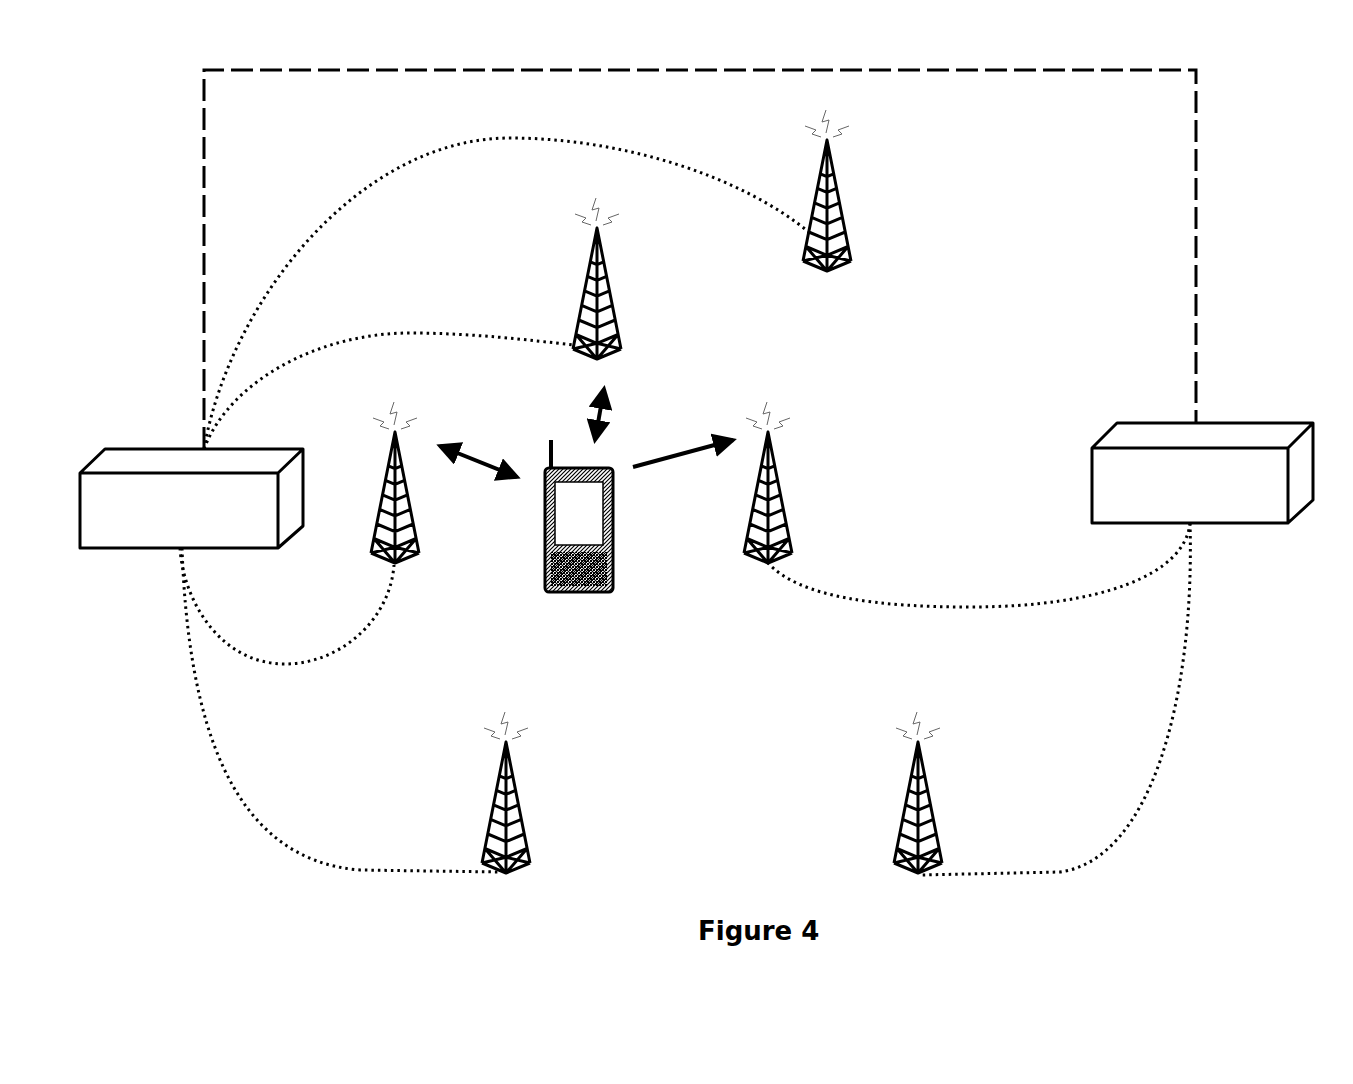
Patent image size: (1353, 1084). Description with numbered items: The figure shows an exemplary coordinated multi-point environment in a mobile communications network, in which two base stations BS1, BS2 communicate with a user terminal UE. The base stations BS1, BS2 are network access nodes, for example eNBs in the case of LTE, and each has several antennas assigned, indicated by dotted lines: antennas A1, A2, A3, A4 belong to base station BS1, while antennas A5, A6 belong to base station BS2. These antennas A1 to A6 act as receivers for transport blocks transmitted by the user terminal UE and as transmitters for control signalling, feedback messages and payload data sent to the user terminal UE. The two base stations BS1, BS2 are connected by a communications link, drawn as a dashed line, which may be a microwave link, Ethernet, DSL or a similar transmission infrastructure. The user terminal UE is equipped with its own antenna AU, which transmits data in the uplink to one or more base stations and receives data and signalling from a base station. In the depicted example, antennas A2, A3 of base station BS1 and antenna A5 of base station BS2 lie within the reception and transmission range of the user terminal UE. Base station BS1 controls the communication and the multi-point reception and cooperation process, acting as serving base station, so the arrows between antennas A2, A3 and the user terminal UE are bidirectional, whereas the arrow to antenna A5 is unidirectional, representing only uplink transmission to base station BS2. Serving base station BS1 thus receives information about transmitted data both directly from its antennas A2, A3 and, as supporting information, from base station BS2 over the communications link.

The antenna A1 is at (845, 190).
The antenna A2 is at (618, 278).
The antenna A3 is at (416, 482).
The antenna A4 is at (484, 792).
The antenna A5 is at (793, 482).
The antenna A6 is at (899, 792).
The antenna AU is at (537, 443).
The user terminal UE is at (604, 547).
The base station BS1 is at (191, 498).
The base station BS2 is at (1202, 473).